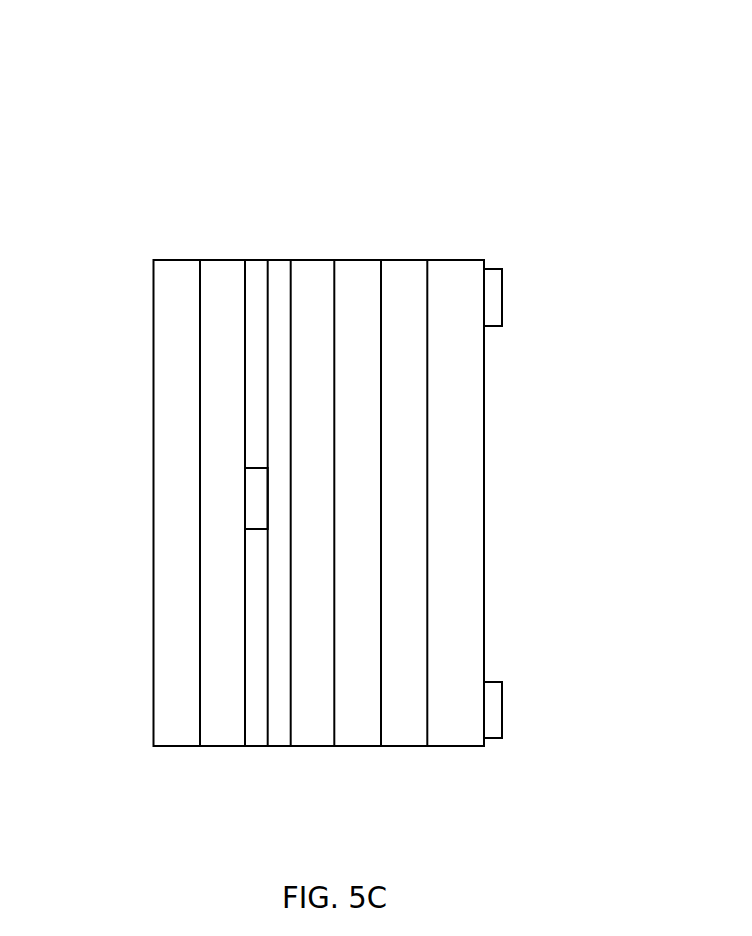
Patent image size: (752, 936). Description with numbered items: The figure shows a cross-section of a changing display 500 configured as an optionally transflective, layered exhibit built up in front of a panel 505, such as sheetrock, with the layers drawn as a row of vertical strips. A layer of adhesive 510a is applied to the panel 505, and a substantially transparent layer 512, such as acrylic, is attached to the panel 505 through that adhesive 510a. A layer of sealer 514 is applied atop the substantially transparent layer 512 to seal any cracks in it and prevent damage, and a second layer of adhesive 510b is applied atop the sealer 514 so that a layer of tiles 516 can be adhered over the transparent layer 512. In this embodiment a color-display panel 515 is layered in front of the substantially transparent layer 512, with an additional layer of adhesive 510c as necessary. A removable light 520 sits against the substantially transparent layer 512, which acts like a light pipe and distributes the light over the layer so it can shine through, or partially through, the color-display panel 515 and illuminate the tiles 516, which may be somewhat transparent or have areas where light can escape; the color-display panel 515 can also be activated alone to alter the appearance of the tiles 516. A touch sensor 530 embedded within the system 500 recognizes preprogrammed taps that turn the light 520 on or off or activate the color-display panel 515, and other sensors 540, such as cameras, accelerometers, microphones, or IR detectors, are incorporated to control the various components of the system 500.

The changing display 500 is at (401, 160).
The panel 505 is at (173, 457).
The layer of adhesive 510a is at (230, 560).
The second layer of adhesive 510b is at (407, 558).
The additional layer of adhesive 510c is at (277, 718).
The substantially transparent layer 512 is at (258, 662).
The layer of sealer 514 is at (350, 653).
The color-display panel 515 is at (315, 608).
The layer of tiles 516 is at (455, 465).
The removable light 520 is at (245, 513).
The touch sensor 530 is at (502, 305).
The other sensors 540 is at (502, 710).